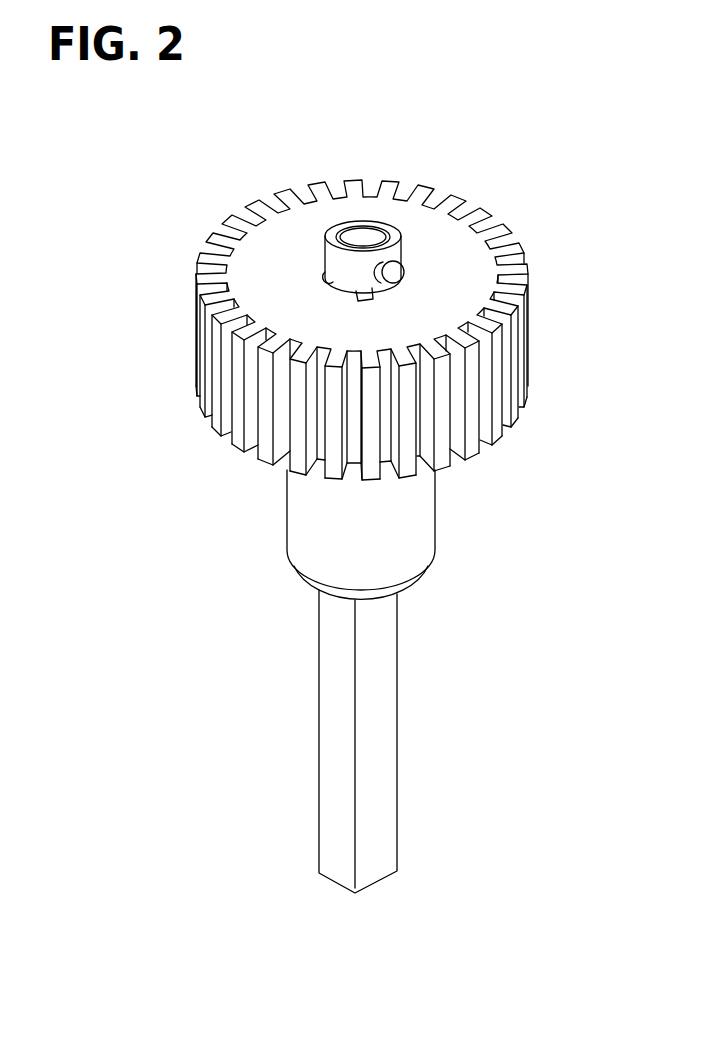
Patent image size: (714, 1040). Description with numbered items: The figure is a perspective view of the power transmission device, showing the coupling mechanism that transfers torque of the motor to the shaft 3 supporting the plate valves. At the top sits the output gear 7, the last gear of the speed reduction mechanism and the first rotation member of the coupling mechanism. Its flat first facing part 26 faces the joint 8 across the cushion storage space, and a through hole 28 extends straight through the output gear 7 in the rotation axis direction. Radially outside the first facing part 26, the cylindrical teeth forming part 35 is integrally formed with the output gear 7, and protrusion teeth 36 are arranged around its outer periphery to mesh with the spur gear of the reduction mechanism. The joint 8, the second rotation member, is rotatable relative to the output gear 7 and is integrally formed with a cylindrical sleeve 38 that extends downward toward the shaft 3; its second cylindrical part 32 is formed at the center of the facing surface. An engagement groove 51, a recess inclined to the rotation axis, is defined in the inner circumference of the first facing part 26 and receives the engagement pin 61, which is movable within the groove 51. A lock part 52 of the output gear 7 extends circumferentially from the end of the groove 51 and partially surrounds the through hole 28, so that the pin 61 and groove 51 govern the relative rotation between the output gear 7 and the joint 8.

The output gear 7 is at (357, 306).
The first facing part 26 is at (432, 252).
The teeth forming part 35 is at (494, 235).
The protrusion teeth 36 is at (527, 322).
The through hole 28 is at (327, 268).
The second cylindrical part 32 is at (333, 232).
The engagement groove 51 is at (322, 292).
The lock part 52 is at (410, 270).
The engagement pin 61 is at (398, 284).
The joint 8 is at (370, 681).
The cylindrical sleeve 38 is at (436, 527).
The shaft 3 is at (397, 783).